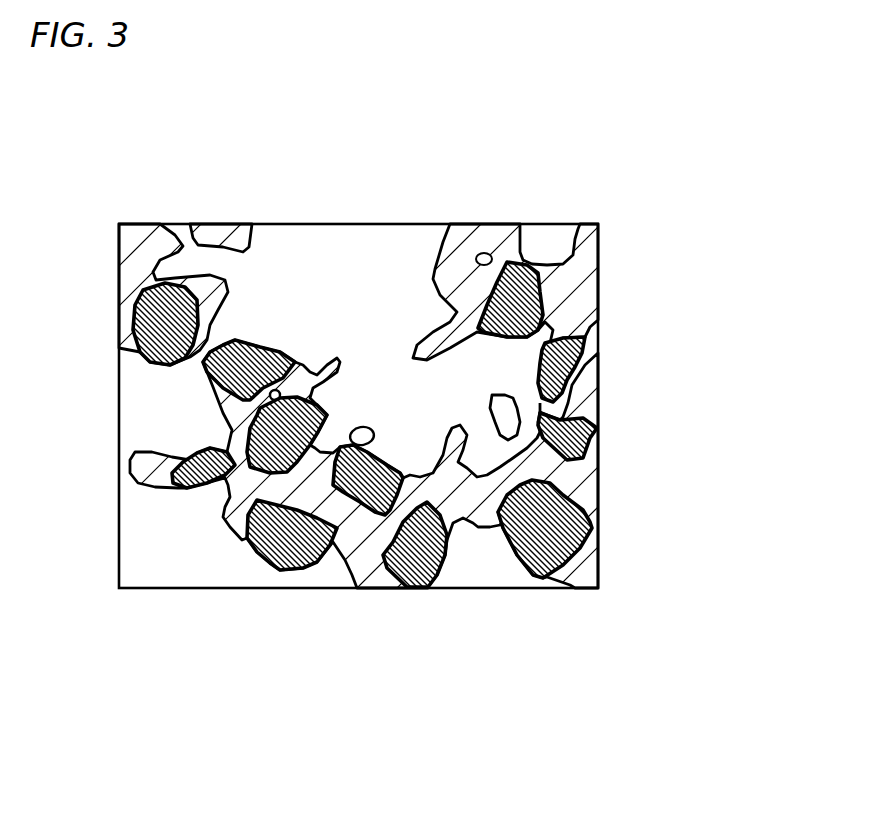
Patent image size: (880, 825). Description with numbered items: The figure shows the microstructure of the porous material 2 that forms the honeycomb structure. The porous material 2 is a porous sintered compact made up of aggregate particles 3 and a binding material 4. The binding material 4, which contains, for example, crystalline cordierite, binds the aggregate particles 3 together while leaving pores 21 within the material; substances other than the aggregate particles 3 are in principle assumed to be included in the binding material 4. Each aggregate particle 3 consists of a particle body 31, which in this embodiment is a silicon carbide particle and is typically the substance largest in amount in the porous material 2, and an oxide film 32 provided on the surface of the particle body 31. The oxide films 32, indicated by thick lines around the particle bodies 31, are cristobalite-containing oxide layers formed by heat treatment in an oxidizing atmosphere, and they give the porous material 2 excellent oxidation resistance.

The porous material 2 is at (245, 171).
The pores 21 is at (360, 272).
The aggregate particles 3 is at (440, 463).
The particle body 31 is at (520, 312).
The oxide film 32 is at (540, 290).
The binding material 4 is at (467, 497).